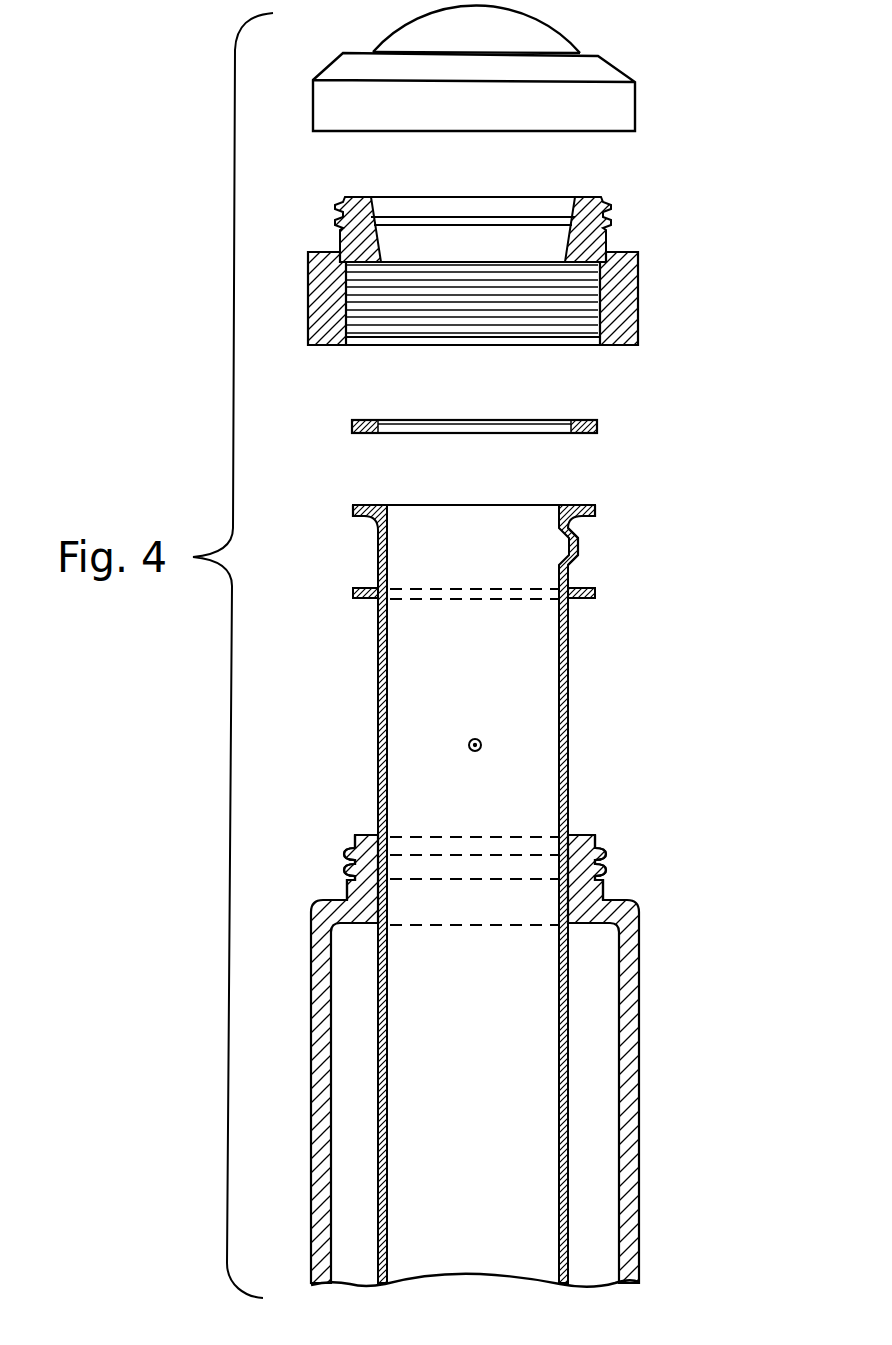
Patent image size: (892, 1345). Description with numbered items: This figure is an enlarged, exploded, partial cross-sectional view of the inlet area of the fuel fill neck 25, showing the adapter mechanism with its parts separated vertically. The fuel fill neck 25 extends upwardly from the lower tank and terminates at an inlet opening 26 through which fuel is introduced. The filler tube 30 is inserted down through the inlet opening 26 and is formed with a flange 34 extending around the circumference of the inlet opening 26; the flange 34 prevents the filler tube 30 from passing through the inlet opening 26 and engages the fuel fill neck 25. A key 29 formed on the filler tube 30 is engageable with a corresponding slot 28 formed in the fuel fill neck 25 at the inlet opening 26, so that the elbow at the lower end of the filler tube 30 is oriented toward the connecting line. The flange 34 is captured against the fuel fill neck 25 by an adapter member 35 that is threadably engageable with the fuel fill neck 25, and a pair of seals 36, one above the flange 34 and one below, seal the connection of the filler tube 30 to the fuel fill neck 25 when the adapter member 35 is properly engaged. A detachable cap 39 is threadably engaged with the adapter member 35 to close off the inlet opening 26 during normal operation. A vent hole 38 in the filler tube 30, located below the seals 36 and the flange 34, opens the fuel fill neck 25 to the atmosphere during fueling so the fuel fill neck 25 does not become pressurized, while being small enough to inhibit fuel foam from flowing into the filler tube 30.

The fuel fill neck 25 is at (640, 1022).
The inlet opening 26 is at (550, 193).
The slot 28 is at (607, 855).
The key 29 is at (578, 543).
The filler tube 30 is at (568, 808).
The flange 34 is at (580, 507).
The adapter member 35 is at (638, 283).
The seals 36 is at (597, 423).
The vent hole 38 is at (481, 742).
The detachable cap 39 is at (635, 100).